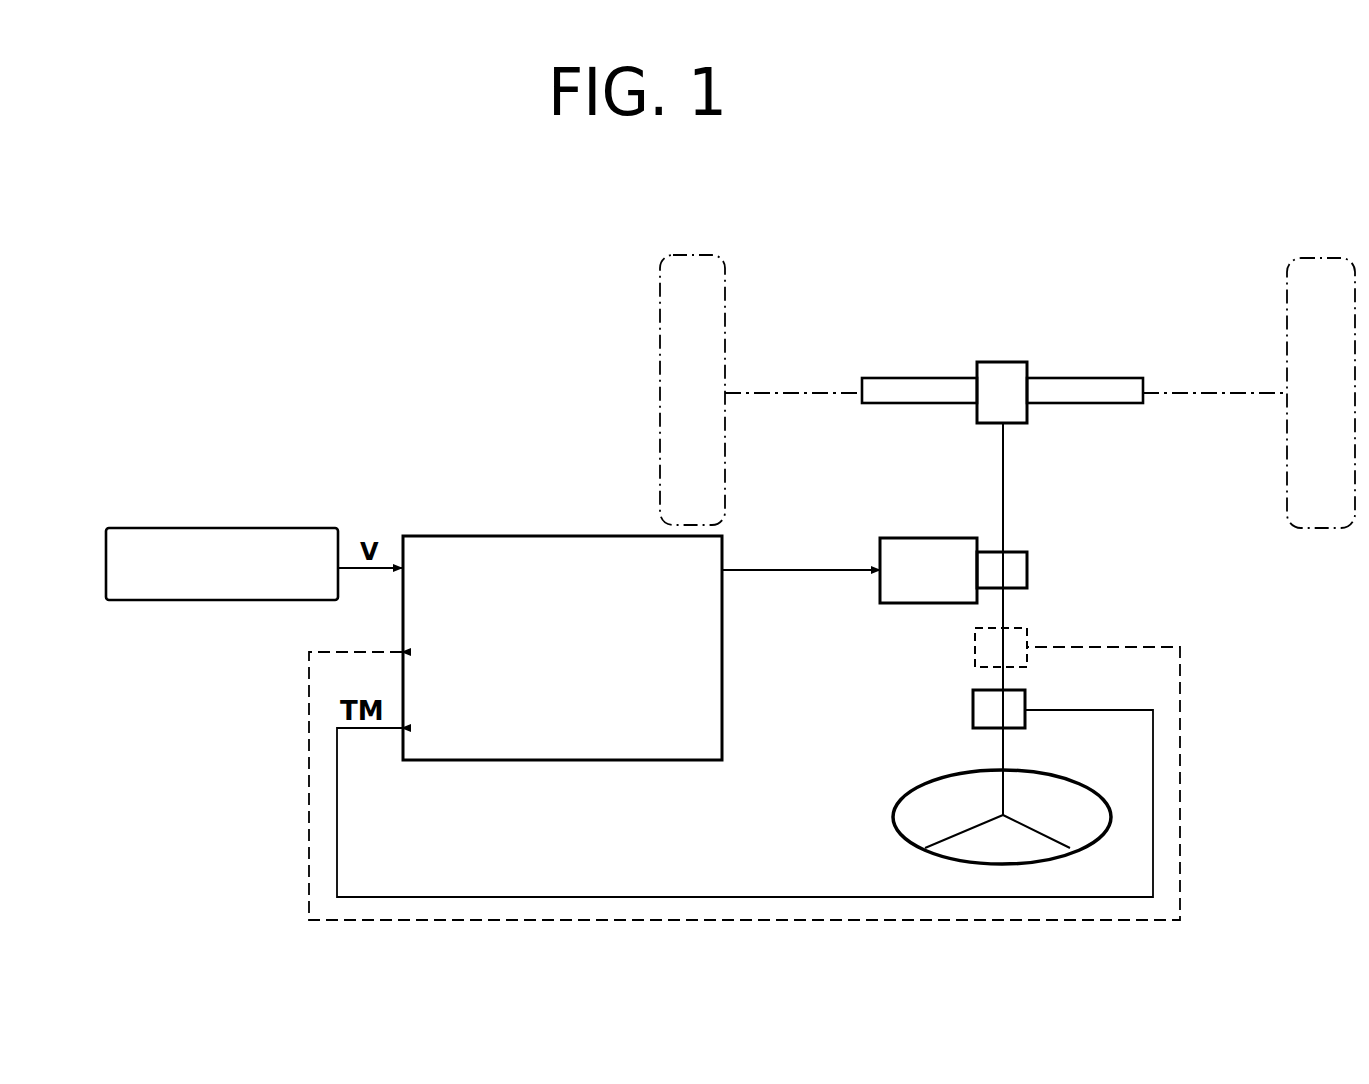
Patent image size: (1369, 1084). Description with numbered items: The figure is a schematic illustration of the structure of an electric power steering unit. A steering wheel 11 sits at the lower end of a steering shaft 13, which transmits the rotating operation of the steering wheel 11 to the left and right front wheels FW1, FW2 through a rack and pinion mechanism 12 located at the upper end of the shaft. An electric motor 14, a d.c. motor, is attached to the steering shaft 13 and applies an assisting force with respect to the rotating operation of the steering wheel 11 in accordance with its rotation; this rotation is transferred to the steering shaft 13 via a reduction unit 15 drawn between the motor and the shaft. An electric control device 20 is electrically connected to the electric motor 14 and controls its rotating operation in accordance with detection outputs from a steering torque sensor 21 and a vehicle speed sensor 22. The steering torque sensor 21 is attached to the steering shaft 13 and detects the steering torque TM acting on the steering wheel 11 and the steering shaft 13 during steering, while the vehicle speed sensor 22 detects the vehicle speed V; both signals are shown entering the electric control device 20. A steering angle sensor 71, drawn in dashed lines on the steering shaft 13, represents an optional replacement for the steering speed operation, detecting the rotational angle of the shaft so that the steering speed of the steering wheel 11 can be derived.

The steering wheel 11 is at (895, 825).
The rack and pinion mechanism 12 is at (1043, 360).
The steering shaft 13 is at (1005, 492).
The electric motor 14 is at (945, 538).
The reduction unit 15 is at (1027, 575).
The electric control device 20 is at (601, 760).
The steering torque sensor 21 is at (973, 695).
The vehicle speed sensor 22 is at (272, 528).
The steering angle sensor 71 is at (975, 640).
The front wheel FW1 is at (1330, 258).
The front wheel FW2 is at (705, 255).